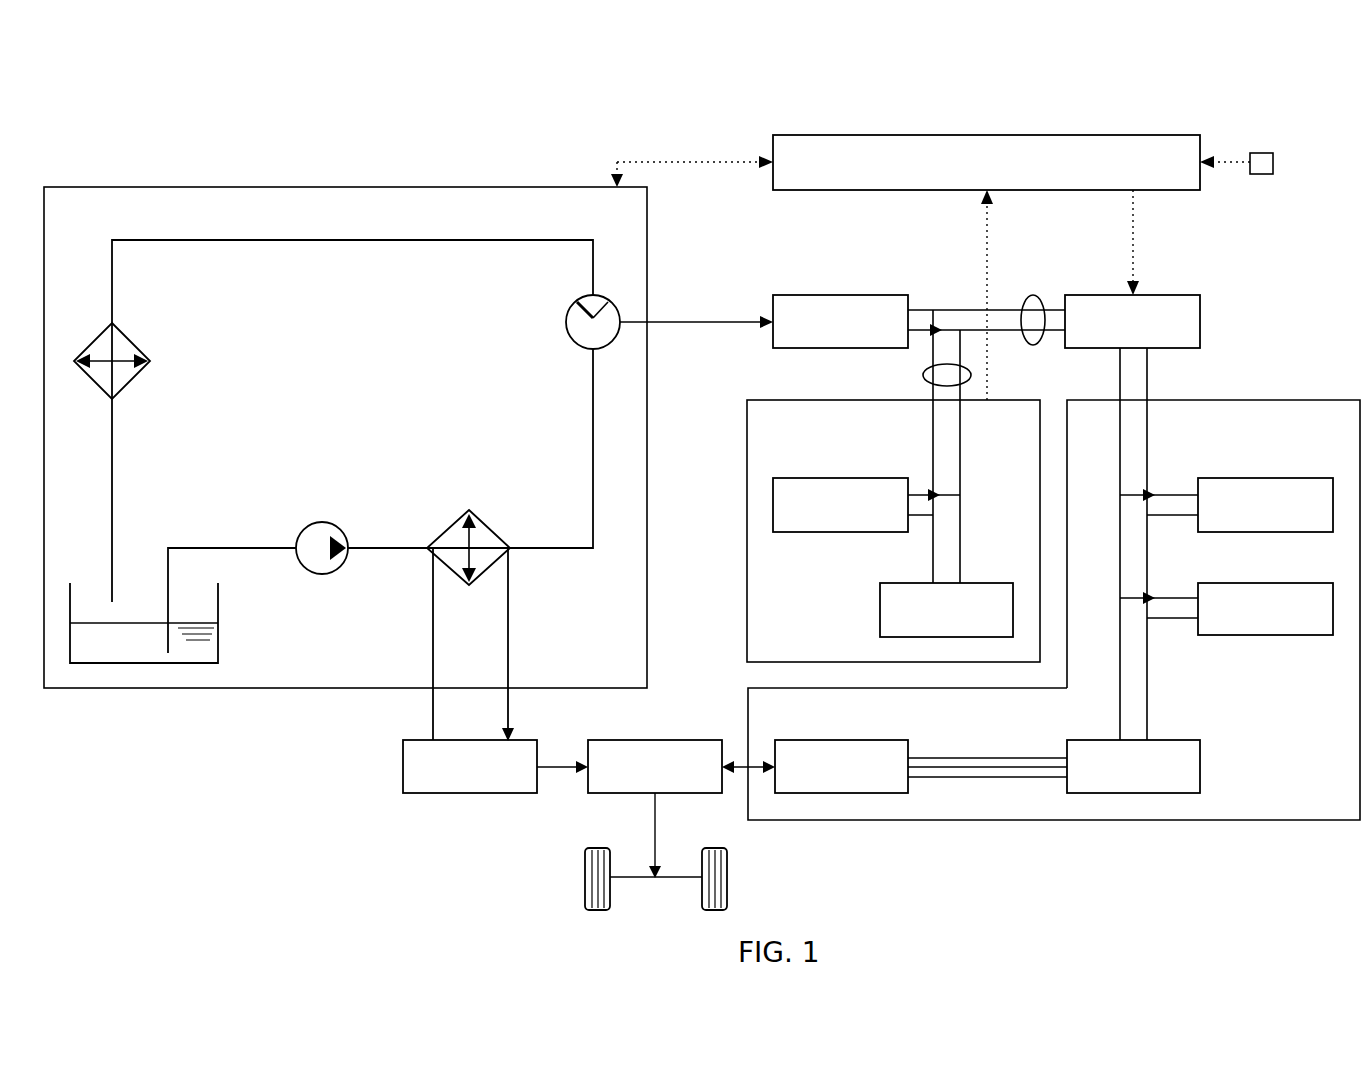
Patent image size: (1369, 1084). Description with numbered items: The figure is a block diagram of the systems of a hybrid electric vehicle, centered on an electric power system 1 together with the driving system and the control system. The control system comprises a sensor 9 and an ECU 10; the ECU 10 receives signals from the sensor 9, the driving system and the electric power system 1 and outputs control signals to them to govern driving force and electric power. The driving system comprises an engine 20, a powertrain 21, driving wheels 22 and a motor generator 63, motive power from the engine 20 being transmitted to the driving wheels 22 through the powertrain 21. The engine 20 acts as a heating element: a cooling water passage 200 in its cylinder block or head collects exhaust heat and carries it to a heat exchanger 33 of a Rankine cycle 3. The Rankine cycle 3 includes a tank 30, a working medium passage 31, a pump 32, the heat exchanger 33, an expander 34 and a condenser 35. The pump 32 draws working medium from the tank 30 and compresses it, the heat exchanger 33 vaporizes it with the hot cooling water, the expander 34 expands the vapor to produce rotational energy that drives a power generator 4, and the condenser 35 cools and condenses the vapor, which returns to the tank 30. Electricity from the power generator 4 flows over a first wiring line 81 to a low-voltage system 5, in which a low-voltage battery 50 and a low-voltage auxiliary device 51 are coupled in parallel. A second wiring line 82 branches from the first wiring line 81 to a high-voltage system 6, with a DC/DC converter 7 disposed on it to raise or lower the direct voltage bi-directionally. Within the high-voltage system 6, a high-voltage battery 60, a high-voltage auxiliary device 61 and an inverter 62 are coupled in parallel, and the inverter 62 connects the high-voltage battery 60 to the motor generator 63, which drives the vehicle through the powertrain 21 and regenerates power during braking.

The electric power system 1 is at (547, 108).
The Rankine cycle 3 is at (345, 187).
The power generator 4 is at (882, 295).
The low-voltage system 5 is at (768, 400).
The high-voltage system 6 is at (1328, 400).
The DC/DC converter 7 is at (1172, 295).
The sensor 9 is at (1262, 153).
The electronic control unit (ECU) 10 is at (1170, 135).
The engine 20 is at (525, 740).
The powertrain 21 is at (693, 740).
The driving wheels 22 is at (727, 877).
The tank 30 is at (222, 603).
The working medium passage 31 is at (205, 548).
The pump 32 is at (335, 527).
The heat exchanger 33 is at (485, 527).
The expander 34 is at (566, 322).
The condenser 35 is at (140, 350).
The low-voltage battery 50 is at (845, 478).
The low-voltage auxiliary device 51 is at (880, 608).
The high-voltage battery 60 is at (1268, 478).
The high-voltage auxiliary device 61 is at (1268, 583).
The inverter 62 is at (1173, 740).
The motor generator 63 is at (880, 740).
The first wiring line 81 is at (923, 375).
The second wiring line 82 is at (1033, 295).
The cooling water passage 200 is at (432, 617).